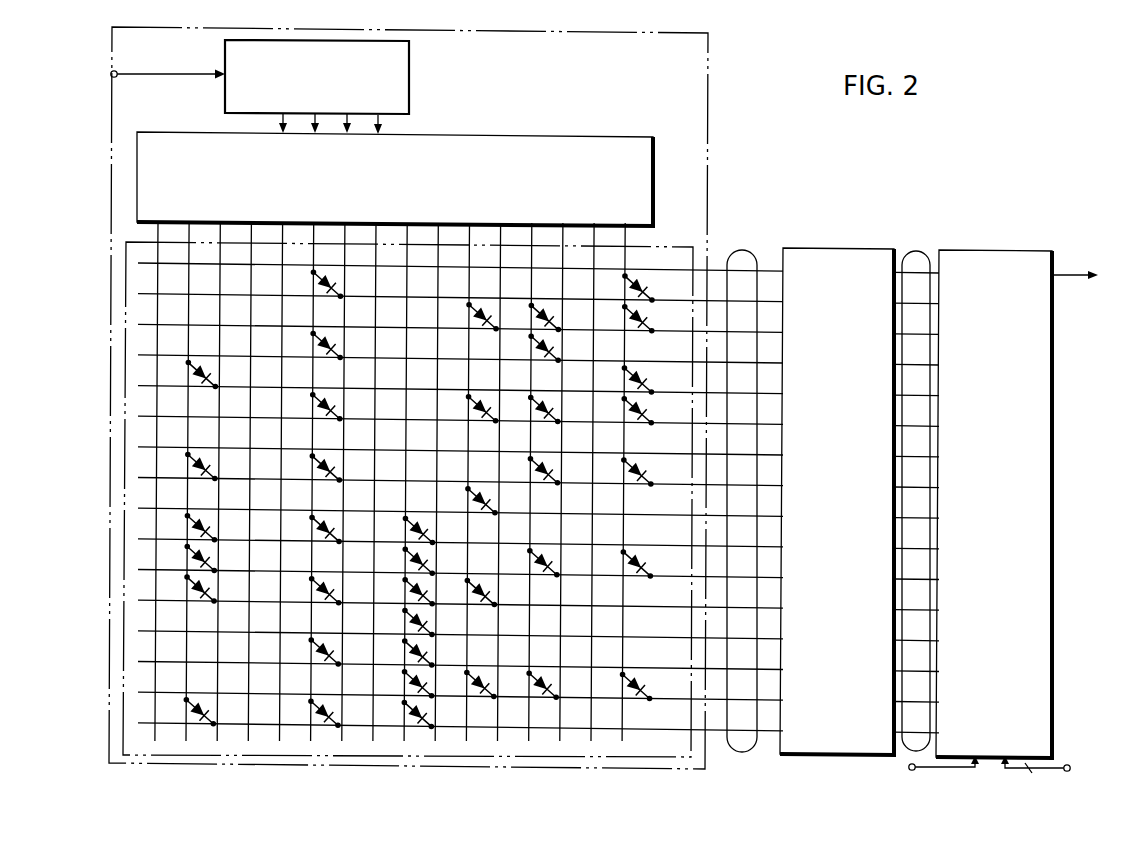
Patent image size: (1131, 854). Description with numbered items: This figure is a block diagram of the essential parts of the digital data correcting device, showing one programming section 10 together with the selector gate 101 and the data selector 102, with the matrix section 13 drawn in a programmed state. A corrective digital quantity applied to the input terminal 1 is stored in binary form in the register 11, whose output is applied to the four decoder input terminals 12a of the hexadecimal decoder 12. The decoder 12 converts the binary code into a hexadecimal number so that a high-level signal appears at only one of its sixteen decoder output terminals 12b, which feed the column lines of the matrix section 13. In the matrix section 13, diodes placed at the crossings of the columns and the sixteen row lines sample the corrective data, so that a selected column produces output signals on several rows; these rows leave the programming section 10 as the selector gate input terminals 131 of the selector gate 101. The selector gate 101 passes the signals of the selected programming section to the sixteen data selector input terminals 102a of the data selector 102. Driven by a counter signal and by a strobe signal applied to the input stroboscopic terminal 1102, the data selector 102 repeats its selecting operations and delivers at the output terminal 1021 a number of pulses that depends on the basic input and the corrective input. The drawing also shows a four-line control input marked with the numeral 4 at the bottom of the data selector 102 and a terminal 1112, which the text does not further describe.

The input terminal 1 is at (112, 71).
The programming section 10 is at (709, 72).
The register 11 is at (409, 62).
The hexadecimal decoder 12 is at (651, 137).
The decoder input terminals 12a is at (270, 124).
The decoder output terminals 12b is at (640, 238).
The matrix section 13 is at (693, 247).
The selector gate input terminals 131 is at (755, 252).
The selector gate 101 is at (885, 249).
The data selector input terminals 102a is at (922, 250).
The data selector 102 is at (1004, 250).
The output terminal 1021 is at (1072, 275).
The input stroboscopic terminal 1102 is at (909, 767).
The four-bit control bus 4 is at (1024, 770).
The data selector control terminal 1112 is at (1067, 765).